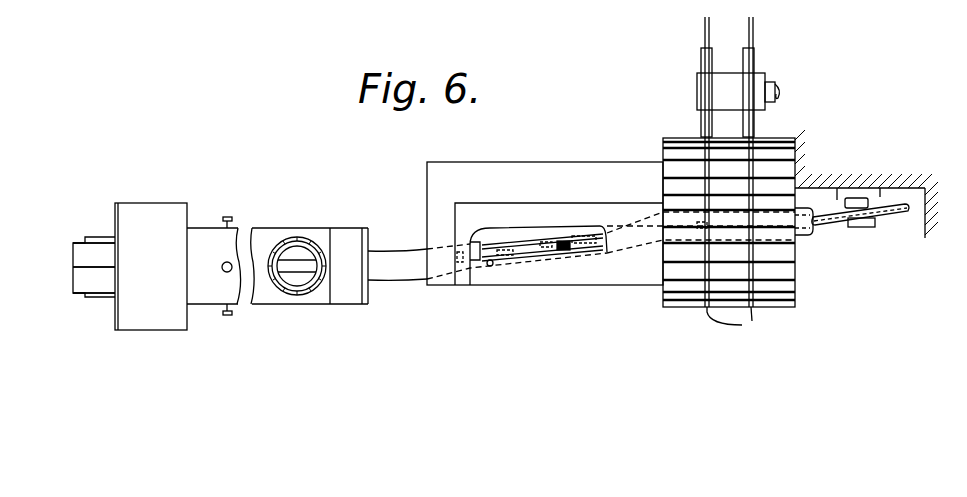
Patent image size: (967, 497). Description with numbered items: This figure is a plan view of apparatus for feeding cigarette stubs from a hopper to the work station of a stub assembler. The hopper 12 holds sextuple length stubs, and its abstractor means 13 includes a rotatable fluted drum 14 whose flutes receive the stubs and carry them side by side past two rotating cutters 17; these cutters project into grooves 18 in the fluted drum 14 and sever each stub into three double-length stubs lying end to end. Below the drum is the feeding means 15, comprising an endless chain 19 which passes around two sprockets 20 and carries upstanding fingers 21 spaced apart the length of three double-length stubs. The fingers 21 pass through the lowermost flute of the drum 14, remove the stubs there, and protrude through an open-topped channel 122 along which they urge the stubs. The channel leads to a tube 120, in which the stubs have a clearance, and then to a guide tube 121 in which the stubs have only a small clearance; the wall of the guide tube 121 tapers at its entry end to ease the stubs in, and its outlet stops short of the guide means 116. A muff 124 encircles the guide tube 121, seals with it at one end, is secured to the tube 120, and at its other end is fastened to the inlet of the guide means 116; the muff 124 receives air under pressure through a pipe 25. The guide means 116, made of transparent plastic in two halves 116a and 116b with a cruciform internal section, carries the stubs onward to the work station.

The guide means 116 is at (79, 240).
The half of guide means 116b is at (81, 258).
The half of guide means 116a is at (88, 281).
The muff 124 is at (268, 232).
The guide tube 121 is at (303, 260).
The pipe 25 is at (311, 292).
The tube 120 is at (397, 264).
The abstractor means 13 is at (657, 288).
The feeding means 15 is at (556, 205).
The fingers 21 is at (560, 250).
The sprockets 20 is at (500, 266).
The open-topped channel 122 is at (607, 252).
The fluted drum 14 is at (797, 270).
The rotating cutters 17 is at (748, 24).
The grooves 18 is at (735, 325).
The hopper 12 is at (821, 171).
The endless chain 19 is at (813, 227).